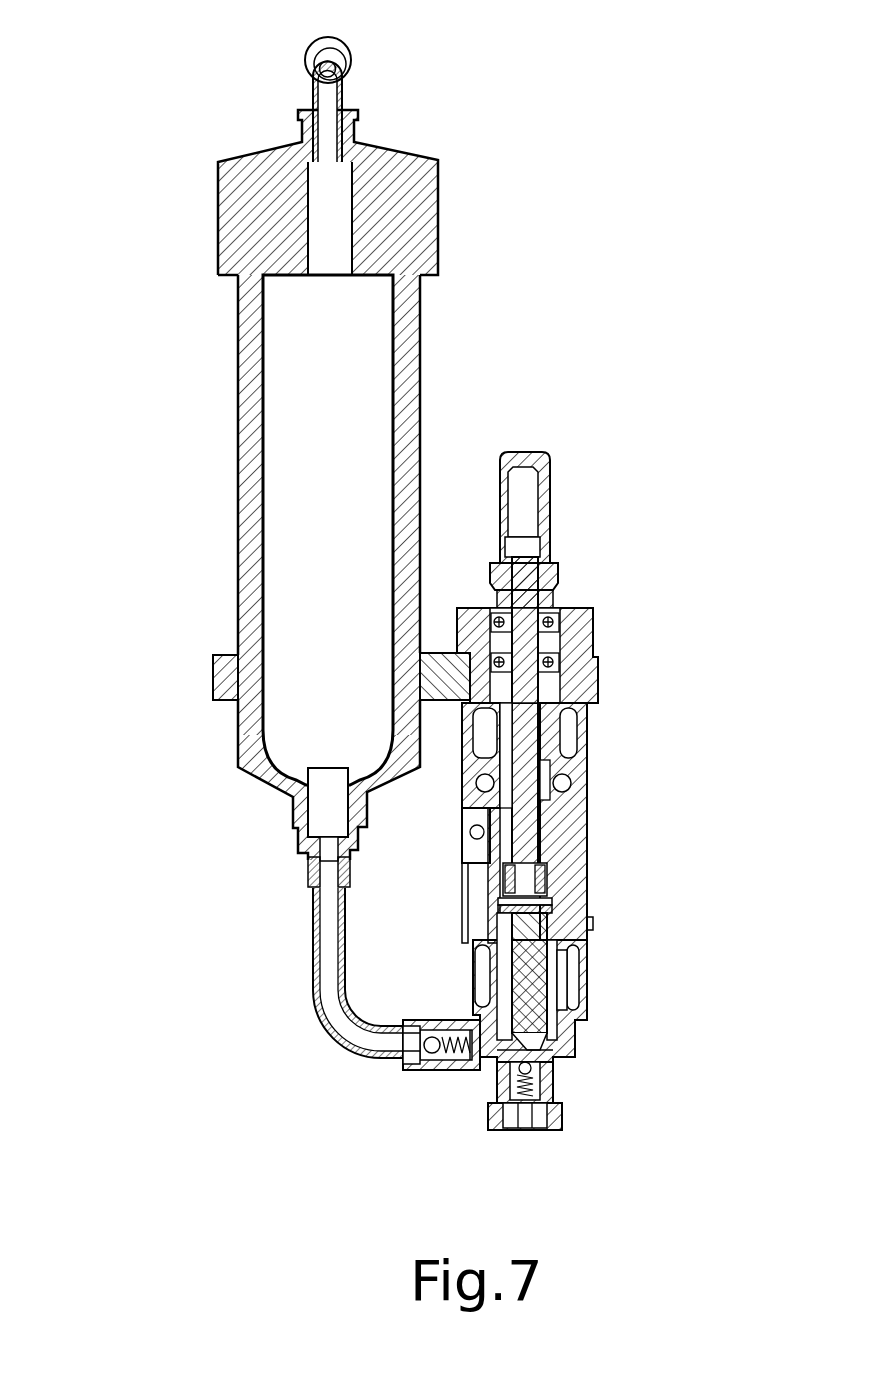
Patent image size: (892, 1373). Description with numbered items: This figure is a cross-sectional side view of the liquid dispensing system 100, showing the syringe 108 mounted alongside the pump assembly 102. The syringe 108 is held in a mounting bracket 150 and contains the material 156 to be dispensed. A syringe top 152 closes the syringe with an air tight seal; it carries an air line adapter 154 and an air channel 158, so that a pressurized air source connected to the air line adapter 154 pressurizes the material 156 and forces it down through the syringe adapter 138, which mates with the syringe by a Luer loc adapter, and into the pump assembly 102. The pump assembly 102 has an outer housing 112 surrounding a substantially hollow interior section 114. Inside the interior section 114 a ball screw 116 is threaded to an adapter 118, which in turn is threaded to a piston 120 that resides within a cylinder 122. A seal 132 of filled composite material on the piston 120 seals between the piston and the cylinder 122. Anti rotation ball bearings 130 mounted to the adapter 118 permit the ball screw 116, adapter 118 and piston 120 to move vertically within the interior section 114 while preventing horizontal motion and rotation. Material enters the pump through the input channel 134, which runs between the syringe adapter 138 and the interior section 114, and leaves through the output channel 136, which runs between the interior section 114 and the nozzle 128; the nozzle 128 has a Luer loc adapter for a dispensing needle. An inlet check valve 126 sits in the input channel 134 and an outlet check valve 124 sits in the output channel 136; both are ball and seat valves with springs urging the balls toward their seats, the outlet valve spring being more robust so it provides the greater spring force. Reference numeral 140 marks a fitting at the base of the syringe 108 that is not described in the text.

The liquid dispensing system 100 is at (603, 240).
The pump assembly 102 is at (510, 826).
The syringe 108 is at (307, 444).
The outer housing 112 is at (578, 612).
The interior section 114 is at (572, 835).
The ball screw 116 is at (535, 583).
The adapter 118 is at (528, 930).
The piston 120 is at (550, 1025).
The cylinder 122 is at (565, 980).
The outlet check valve 124 is at (547, 1083).
The inlet check valve 126 is at (412, 1062).
The nozzle 128 is at (542, 1138).
The anti rotation ball bearings 130 is at (545, 903).
The seal 132 is at (535, 1042).
The input channel 134 is at (443, 1030).
The output channel 136 is at (498, 1075).
The syringe adapter 138 is at (325, 965).
The tube fitting 140 is at (312, 880).
The mounting bracket 150 is at (218, 657).
The syringe top 152 is at (427, 197).
The air line adapter 154 is at (336, 62).
The material 156 is at (350, 500).
The air channel 158 is at (318, 245).